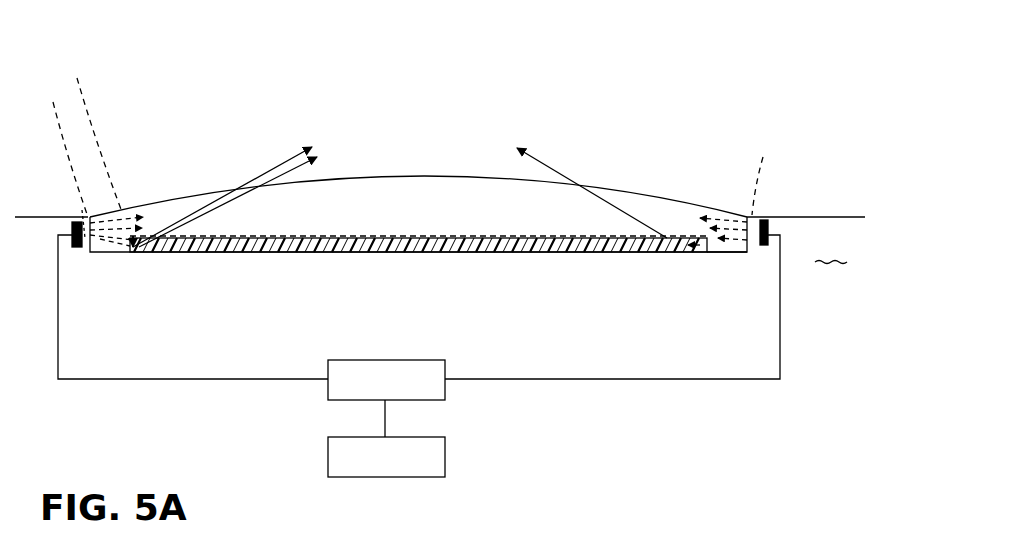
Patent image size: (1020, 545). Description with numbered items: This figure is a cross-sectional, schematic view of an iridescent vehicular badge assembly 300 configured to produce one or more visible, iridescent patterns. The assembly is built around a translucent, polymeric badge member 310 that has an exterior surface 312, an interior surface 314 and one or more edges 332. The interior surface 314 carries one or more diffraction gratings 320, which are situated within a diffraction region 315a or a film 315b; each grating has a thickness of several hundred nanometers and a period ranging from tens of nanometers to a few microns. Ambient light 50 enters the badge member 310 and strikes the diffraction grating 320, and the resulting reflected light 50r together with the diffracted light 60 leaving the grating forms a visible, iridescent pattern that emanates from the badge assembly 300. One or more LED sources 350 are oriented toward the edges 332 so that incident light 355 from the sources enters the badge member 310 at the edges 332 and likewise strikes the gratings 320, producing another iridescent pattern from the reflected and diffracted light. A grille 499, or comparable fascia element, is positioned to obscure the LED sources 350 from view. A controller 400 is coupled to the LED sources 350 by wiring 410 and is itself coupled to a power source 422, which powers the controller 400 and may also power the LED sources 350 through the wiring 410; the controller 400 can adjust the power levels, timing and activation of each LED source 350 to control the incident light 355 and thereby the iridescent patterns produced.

The iridescent vehicular badge assembly 300 is at (578, 105).
The badge member 310 is at (665, 222).
The exterior surface 312 is at (165, 198).
The interior surface 314 is at (109, 259).
The diffraction region 315a is at (718, 240).
The film 315b is at (418, 280).
The diffraction grating 320 is at (545, 252).
The edge 332 is at (749, 253).
The LED source 350 is at (72, 227).
The incident light 355 is at (414, 159).
The ambient light 50 is at (91, 130).
The reflected light 50r is at (300, 162).
The diffracted light 60 is at (300, 150).
The controller 400 is at (405, 360).
The wiring 410 is at (208, 378).
The power source 422 is at (445, 463).
The grille 499 is at (835, 250).